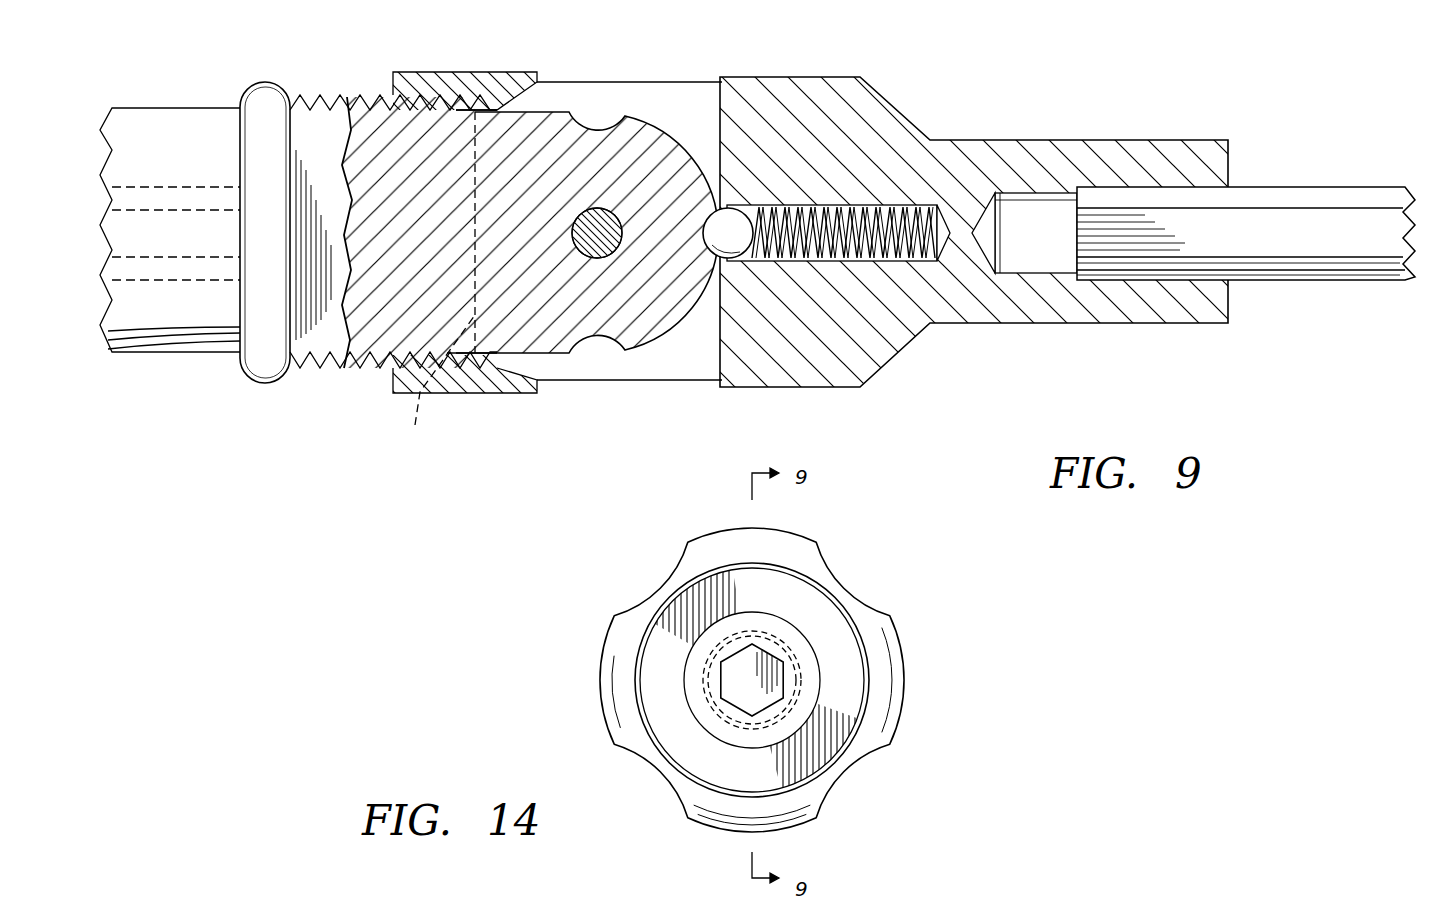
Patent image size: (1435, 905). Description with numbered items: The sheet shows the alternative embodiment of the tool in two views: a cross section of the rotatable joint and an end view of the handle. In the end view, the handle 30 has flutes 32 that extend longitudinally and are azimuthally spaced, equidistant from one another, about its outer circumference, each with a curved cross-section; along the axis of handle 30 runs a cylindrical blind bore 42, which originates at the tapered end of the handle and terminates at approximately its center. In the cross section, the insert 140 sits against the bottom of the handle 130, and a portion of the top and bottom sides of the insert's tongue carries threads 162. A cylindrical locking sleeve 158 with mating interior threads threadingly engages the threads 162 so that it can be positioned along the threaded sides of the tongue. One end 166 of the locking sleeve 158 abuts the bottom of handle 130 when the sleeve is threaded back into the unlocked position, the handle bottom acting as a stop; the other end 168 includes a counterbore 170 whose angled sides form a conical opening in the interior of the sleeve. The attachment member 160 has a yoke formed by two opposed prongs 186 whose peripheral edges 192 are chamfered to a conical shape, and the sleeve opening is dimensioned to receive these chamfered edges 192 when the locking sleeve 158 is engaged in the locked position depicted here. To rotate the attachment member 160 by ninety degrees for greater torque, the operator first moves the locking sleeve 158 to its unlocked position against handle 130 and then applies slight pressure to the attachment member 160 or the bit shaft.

In FIG. 9, the handle 130 is at (172, 108).
In FIG. 9, the insert 140 is at (325, 95).
In FIG. 9, the locking sleeve 158 is at (480, 72).
In FIG. 9, the attachment member 160 is at (815, 77).
In FIG. 9, the threads 162 is at (348, 372).
In FIG. 9, the end of locking sleeve 166 is at (393, 85).
In FIG. 9, the other end of locking sleeve 168 is at (537, 82).
In FIG. 9, the counterbore 170 is at (1320, 187).
In FIG. 9, the prongs 186 is at (663, 97).
In FIG. 9, the peripheral edges of prongs 192 is at (435, 381).
In FIG. 14, the handle 30 is at (751, 683).
In FIG. 14, the flutes 32 is at (711, 531).
In FIG. 14, the cylindrical blind bore 42 is at (747, 690).